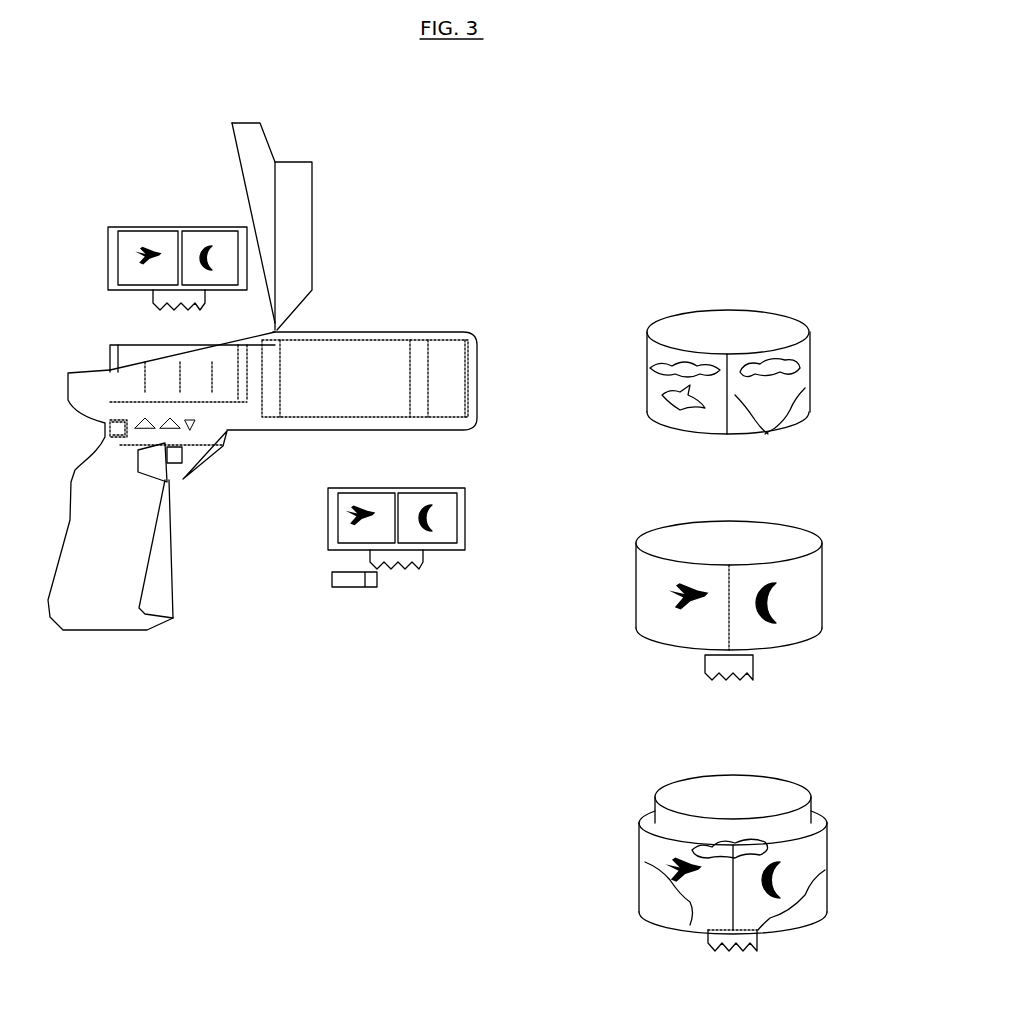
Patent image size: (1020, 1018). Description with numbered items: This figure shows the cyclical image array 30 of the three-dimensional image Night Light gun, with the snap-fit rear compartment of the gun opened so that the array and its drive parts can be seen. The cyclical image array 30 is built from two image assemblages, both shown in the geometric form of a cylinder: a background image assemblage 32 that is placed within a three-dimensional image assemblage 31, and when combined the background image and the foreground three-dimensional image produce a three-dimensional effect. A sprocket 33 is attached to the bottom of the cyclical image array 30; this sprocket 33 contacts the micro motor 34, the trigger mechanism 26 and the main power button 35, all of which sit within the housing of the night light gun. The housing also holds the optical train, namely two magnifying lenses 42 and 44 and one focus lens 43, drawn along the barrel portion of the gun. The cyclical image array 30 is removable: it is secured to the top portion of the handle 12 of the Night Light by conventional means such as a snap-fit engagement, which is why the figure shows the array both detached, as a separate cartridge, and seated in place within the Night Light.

The handle 12 is at (75, 472).
The trigger mechanism 26 is at (212, 462).
The cyclical image array 30 is at (128, 227).
The 3D image assemblage 31 is at (822, 580).
The background image assemblage 32 is at (810, 382).
The sprocket 33 is at (423, 557).
The micro motor 34 is at (107, 427).
The main power button 35 is at (137, 470).
The magnifying lens 42 is at (268, 365).
The focus lens 43 is at (412, 340).
The magnifying lens 44 is at (468, 360).